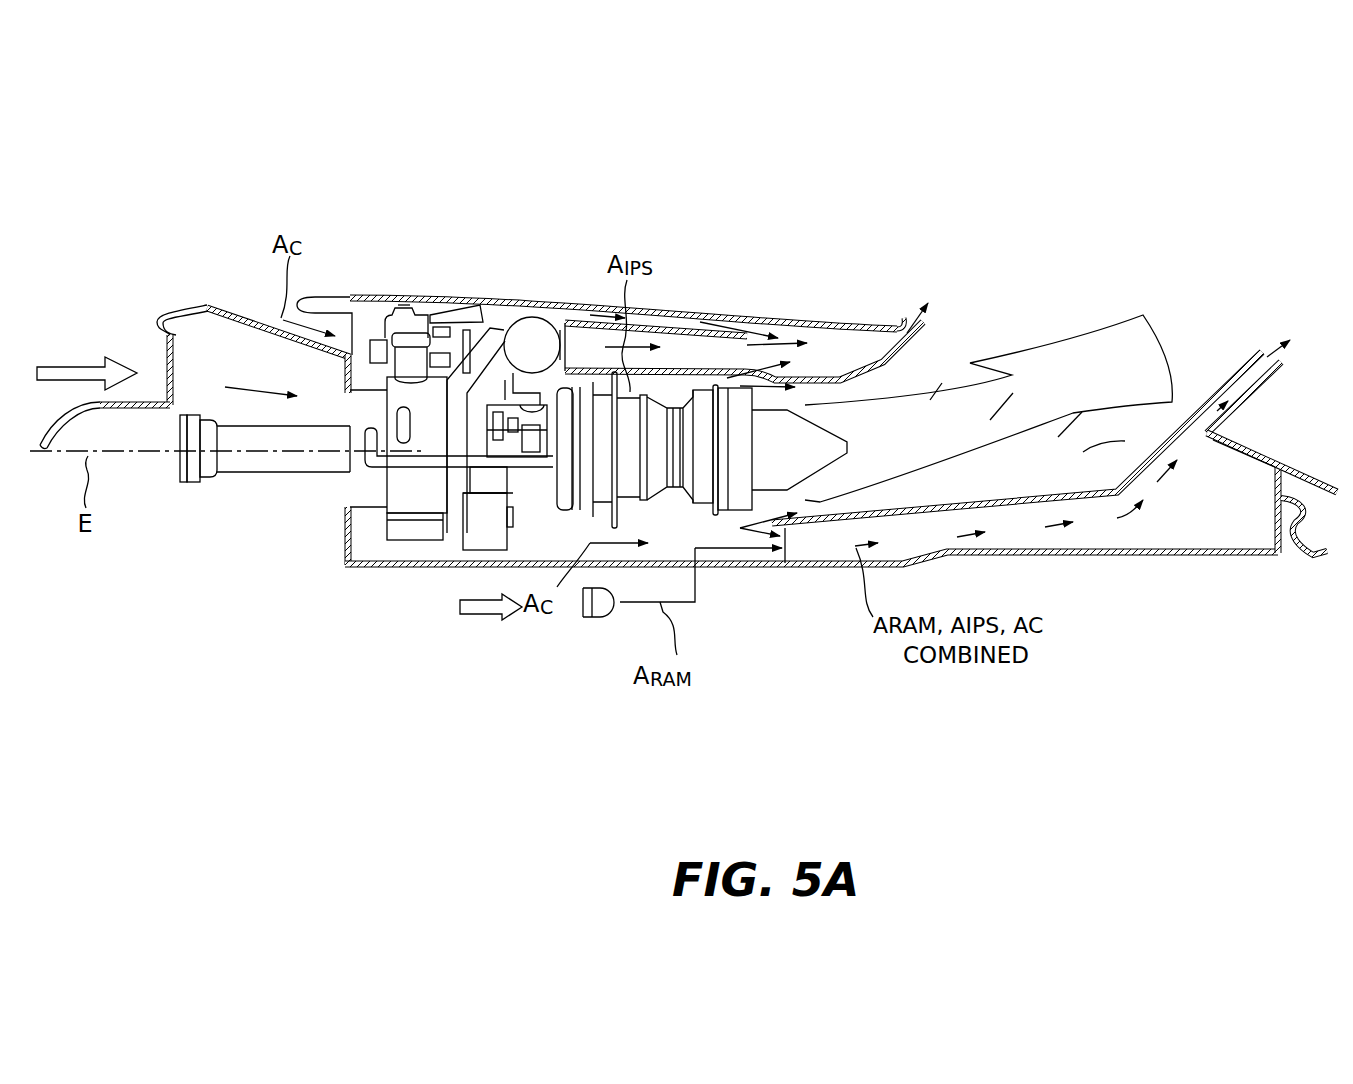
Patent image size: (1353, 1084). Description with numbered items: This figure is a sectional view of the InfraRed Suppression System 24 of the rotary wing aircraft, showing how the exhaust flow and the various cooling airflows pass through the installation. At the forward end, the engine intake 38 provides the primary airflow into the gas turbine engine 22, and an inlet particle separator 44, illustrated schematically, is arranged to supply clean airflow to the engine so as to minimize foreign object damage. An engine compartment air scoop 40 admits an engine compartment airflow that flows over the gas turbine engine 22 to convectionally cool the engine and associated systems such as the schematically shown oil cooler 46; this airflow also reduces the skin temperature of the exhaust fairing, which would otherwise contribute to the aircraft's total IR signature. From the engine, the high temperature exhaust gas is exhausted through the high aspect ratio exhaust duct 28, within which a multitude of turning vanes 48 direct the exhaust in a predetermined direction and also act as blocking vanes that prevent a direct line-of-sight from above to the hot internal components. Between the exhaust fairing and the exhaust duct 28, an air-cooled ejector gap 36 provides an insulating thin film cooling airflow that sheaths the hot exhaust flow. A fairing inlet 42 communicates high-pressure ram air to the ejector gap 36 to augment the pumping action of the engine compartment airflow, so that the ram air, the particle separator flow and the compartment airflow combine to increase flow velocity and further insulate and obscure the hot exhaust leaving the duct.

The gas turbine engine 22 is at (413, 503).
The InfraRed Suppression System 24 is at (1070, 218).
The high aspect ratio exhaust duct 28 is at (1191, 372).
The air-cooled ejector gap 36 is at (903, 297).
The engine intake 38 is at (163, 348).
The engine compartment air scoop 40 is at (268, 303).
The fairing inlet 42 is at (600, 617).
The inlet particle separator 44 is at (490, 303).
The oil cooler 46 is at (443, 310).
The turning vanes 48 is at (1071, 426).